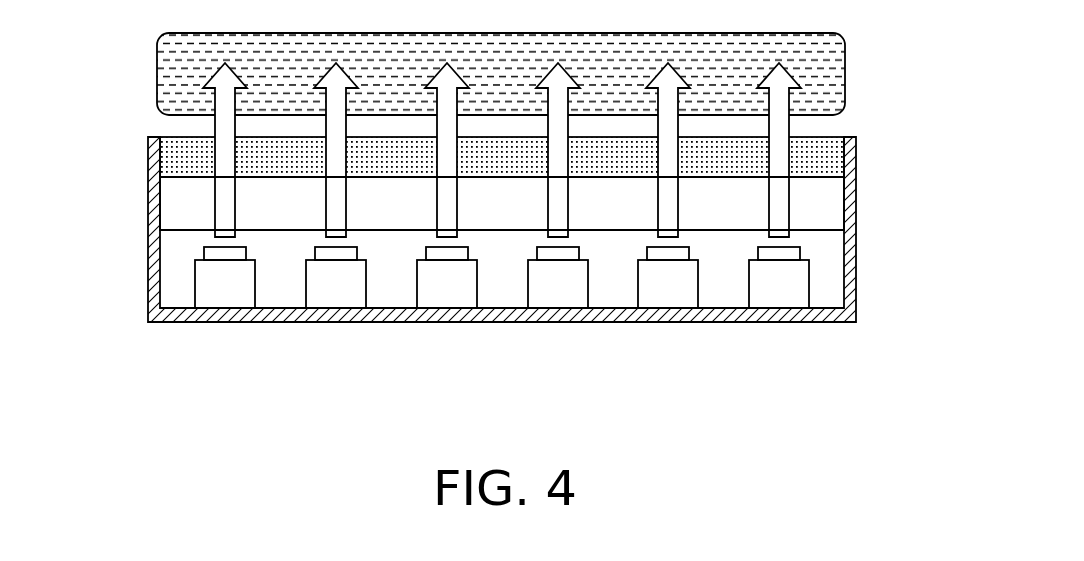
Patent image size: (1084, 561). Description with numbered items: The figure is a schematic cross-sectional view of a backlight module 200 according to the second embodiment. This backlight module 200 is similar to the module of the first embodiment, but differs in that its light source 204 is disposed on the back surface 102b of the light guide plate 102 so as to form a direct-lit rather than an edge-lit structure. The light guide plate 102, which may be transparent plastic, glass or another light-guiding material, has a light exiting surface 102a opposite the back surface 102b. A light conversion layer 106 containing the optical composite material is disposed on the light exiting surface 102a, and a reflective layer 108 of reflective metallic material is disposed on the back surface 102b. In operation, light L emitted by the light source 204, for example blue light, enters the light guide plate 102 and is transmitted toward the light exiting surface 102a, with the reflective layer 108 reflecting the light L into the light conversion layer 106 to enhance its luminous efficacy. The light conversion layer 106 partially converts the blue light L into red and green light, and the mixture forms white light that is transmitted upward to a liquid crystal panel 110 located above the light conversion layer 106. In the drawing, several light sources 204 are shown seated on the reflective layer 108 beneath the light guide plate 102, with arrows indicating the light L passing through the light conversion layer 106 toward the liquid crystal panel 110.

The light guide plate 102 is at (833, 202).
The light exiting surface 102a is at (180, 173).
The back surface 102b is at (180, 228).
The light conversion layer 106 is at (833, 163).
The reflective layer 108 is at (850, 251).
The liquid crystal panel 110 is at (833, 77).
The backlight module 200 is at (935, 413).
The light source 204 is at (665, 297).
The light L is at (223, 197).